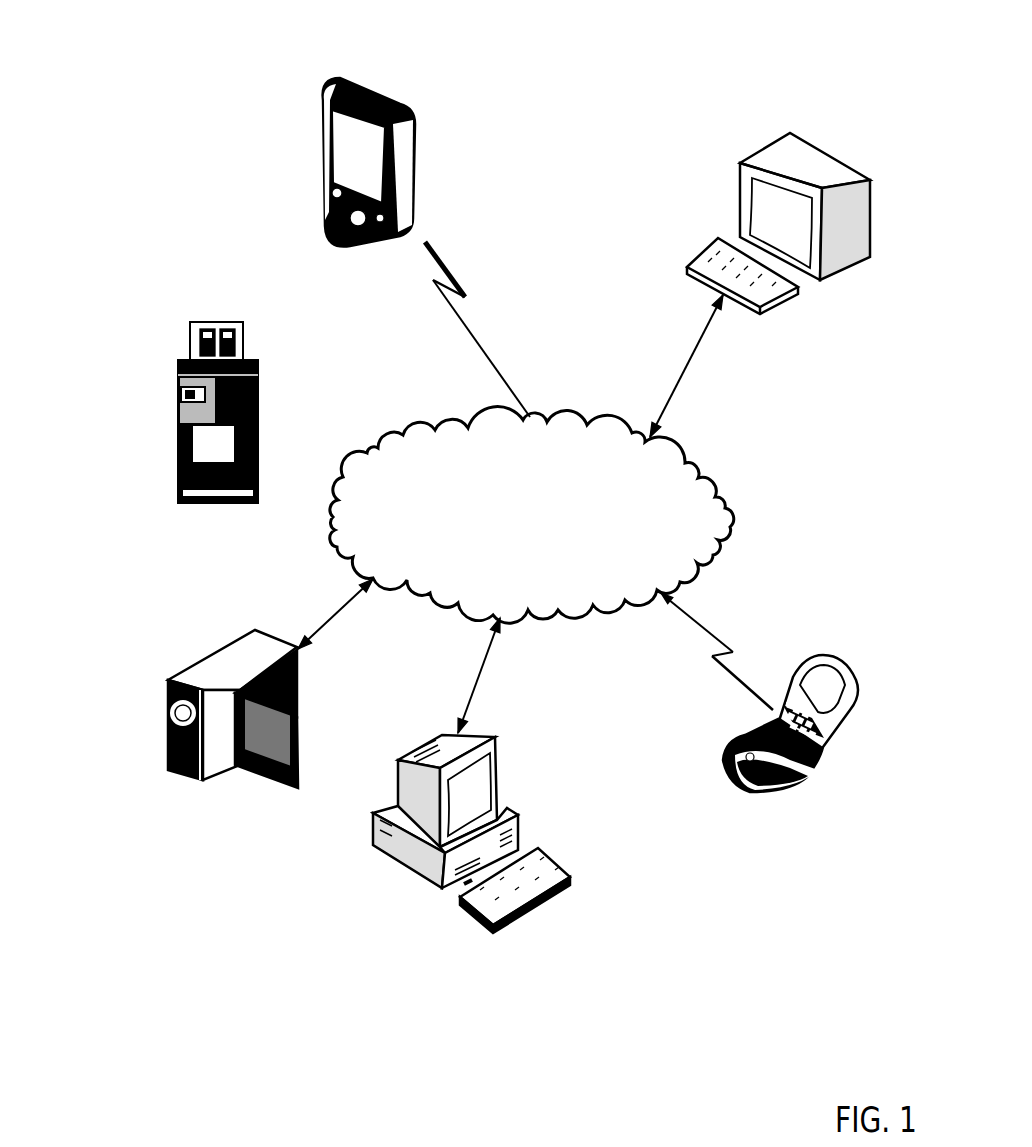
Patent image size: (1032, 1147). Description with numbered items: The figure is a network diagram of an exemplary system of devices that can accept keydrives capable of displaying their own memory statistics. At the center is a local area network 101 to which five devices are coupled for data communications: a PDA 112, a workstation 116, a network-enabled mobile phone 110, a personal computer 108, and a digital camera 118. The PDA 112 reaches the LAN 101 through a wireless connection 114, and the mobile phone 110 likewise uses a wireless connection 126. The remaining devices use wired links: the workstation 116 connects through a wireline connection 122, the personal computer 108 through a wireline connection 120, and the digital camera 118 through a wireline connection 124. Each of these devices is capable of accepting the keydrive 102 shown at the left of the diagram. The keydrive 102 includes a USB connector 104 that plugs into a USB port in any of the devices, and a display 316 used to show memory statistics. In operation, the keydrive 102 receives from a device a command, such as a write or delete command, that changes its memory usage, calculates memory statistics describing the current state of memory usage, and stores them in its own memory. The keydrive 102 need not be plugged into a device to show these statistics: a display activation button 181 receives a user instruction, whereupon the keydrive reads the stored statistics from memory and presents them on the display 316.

The local area network 101 is at (582, 531).
The keydrive 102 is at (192, 373).
The USB connector 104 is at (176, 282).
The personal computer 108 is at (378, 984).
The network-enabled mobile phone 110 is at (793, 874).
The PDA 112 is at (403, 66).
The wireless connection 114 is at (497, 341).
The workstation 116 is at (807, 374).
The digital camera 118 is at (220, 864).
The wireline connection 120 is at (537, 716).
The wireline connection 122 is at (648, 374).
The wireline connection 124 is at (293, 616).
The wireless connection 126 is at (670, 682).
The display activation button 181 is at (70, 376).
The display 316 is at (102, 541).